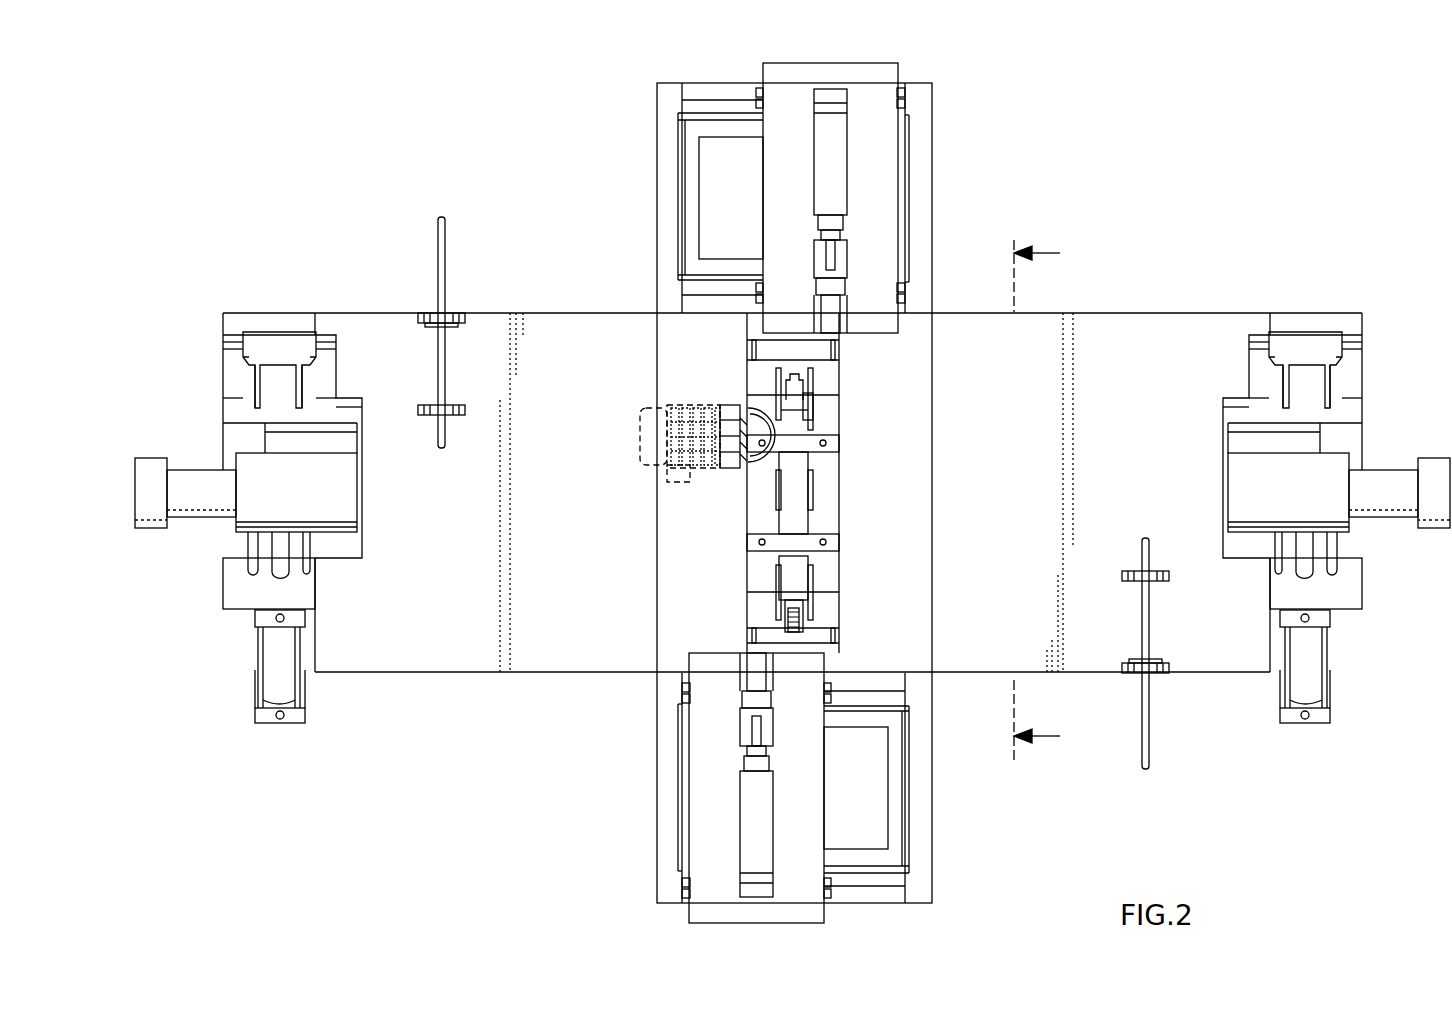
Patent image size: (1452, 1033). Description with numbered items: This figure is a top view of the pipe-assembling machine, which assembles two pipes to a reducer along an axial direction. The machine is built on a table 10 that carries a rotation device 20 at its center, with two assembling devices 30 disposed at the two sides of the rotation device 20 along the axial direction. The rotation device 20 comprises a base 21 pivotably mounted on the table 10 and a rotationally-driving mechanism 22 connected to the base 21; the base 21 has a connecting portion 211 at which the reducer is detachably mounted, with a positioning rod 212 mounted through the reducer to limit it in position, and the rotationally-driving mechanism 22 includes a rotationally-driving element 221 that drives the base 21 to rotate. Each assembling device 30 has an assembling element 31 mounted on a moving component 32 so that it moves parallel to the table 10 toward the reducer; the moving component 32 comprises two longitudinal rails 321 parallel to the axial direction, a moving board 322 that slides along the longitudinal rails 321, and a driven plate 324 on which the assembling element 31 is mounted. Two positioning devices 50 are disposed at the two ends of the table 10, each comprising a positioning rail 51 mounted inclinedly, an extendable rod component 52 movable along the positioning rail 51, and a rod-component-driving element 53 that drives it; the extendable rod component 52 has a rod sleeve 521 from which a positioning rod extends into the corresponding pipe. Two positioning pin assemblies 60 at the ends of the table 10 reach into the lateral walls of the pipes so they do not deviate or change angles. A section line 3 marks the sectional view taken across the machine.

The table 10 is at (1160, 352).
The section line 3- 3 is at (1037, 489).
The rotation device 20 is at (766, 497).
The base 21 is at (796, 578).
The connecting portion 211 is at (810, 540).
The positioning rod 212 is at (822, 443).
The rotationally-driving mechanism 22 is at (643, 440).
The rotationally-driving element 221 is at (693, 400).
The assembling device 30 is at (926, 98).
The assembling element 31 is at (840, 258).
The moving component 32 is at (750, 192).
The longitudinal rail 321 is at (694, 95).
The moving board 322 is at (876, 193).
The driven plate 324 is at (836, 148).
The positioning device 50 is at (200, 445).
The positioning rail 51 is at (230, 578).
The extendable rod component 52 is at (148, 535).
The rod sleeve 521 is at (345, 500).
The rod-component-driving element 53 is at (275, 665).
The positioning pin assembly 60 is at (430, 268).